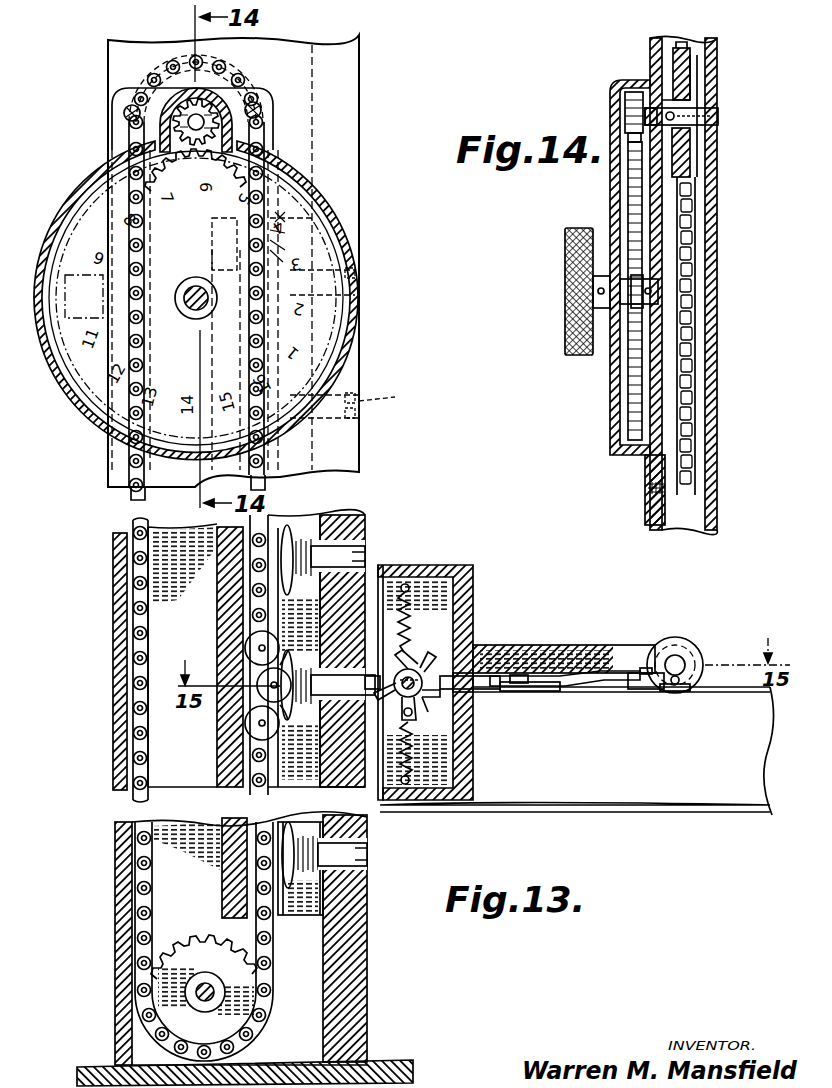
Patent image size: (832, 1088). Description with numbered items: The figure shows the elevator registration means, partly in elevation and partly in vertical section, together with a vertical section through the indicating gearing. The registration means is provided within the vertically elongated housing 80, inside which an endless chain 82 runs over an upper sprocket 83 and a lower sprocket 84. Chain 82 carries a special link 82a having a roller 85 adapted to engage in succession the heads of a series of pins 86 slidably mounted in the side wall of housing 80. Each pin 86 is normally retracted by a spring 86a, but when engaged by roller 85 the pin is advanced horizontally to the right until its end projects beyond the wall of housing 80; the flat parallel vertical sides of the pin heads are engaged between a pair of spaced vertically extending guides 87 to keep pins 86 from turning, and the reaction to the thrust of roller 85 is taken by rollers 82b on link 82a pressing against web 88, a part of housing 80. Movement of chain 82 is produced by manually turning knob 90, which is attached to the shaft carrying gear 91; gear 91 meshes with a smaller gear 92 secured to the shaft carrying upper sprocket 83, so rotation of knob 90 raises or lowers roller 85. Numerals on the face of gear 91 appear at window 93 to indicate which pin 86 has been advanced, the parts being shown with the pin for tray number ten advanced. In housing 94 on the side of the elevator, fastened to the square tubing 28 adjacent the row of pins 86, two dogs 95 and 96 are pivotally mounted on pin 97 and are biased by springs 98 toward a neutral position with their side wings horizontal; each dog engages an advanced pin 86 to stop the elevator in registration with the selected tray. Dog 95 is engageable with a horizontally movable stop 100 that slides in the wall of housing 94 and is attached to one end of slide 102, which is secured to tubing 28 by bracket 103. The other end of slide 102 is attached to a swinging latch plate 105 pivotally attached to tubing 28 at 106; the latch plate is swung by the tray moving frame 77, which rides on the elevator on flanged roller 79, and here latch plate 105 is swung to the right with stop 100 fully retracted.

In FIG. 13, the square tubing 28 is at (577, 751).
In FIG. 13, the bifurcated frame 77 is at (592, 645).
In FIG. 13, the roller 79 is at (696, 658).
In FIG. 13, the housing 80 is at (113, 603).
In FIG. 14, the housing 80 is at (718, 306).
In FIG. 13, the endless chain 82 is at (133, 653).
In FIG. 14, the endless chain 82 is at (693, 210).
In FIG. 13, the special link 82a is at (252, 702).
In FIG. 13, the rollers 82b is at (250, 732).
In FIG. 13, the upper sprocket 83 is at (172, 196).
In FIG. 14, the upper sprocket 83 is at (685, 82).
In FIG. 13, the lower sprocket 84 is at (180, 935).
In FIG. 13, the roller 85 is at (290, 712).
In FIG. 13, the pin 86 is at (367, 857).
In FIG. 13, the spring 86a is at (292, 540).
In FIG. 13, the guides 87 is at (306, 907).
In FIG. 13, the web 88 is at (220, 642).
In FIG. 14, the knob 90 is at (566, 298).
In FIG. 13, the gear 91 is at (240, 136).
In FIG. 14, the gear 91 is at (636, 172).
In FIG. 13, the smaller gear 92 is at (172, 122).
In FIG. 14, the smaller gear 92 is at (634, 93).
In FIG. 13, the window 93 is at (72, 318).
In FIG. 13, the housing 94 is at (465, 580).
In FIG. 13, the dog 95 is at (412, 660).
In FIG. 13, the dog 96 is at (426, 697).
In FIG. 13, the pin 97 is at (418, 678).
In FIG. 13, the springs 98 is at (392, 600).
In FIG. 13, the horizontally movable stop 100 is at (478, 676).
In FIG. 13, the slide 102 is at (500, 690).
In FIG. 13, the bracket 103 is at (530, 673).
In FIG. 13, the swinging latch plate 105 is at (668, 690).
In FIG. 13, the pivot 106 is at (632, 673).